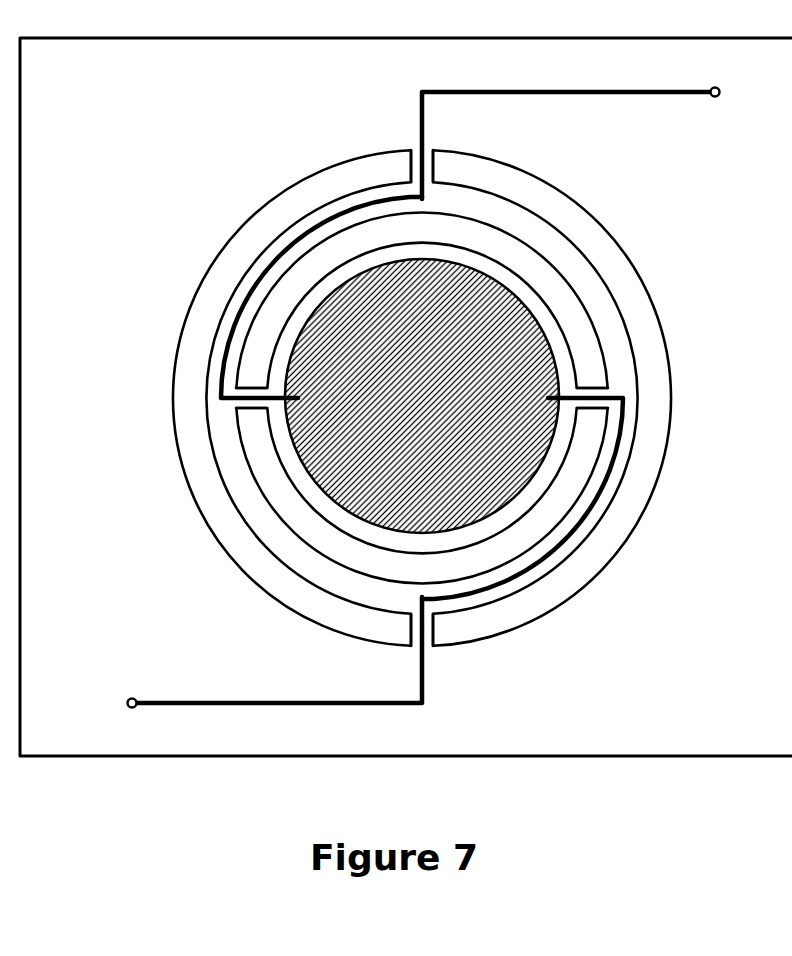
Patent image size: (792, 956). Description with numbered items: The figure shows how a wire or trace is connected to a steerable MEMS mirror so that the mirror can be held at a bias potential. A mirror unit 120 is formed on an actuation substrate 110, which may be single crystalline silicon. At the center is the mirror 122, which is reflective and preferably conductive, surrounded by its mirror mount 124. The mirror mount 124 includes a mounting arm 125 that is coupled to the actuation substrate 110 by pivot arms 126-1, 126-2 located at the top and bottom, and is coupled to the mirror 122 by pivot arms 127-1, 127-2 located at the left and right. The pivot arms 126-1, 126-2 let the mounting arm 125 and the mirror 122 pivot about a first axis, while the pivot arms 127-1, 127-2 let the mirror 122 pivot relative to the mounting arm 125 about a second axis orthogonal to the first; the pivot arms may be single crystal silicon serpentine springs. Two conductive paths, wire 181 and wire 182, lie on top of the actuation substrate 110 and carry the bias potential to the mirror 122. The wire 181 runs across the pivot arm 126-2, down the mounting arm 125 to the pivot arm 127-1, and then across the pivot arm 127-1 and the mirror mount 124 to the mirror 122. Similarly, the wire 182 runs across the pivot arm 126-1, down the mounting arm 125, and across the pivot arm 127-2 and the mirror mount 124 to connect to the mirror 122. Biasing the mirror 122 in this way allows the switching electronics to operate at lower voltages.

The actuation substrate 110 is at (406, 397).
The mirror unit 120 is at (238, 222).
The mirror 122 is at (480, 315).
The mirror mount 124 is at (540, 308).
The mounting arm 125 is at (612, 325).
The pivot arm 126-1 is at (431, 165).
The pivot arm 126-2 is at (415, 628).
The pivot arm 127-1 is at (599, 387).
The pivot arm 127-2 is at (242, 410).
The wire 181 is at (178, 701).
The wire 182 is at (598, 98).